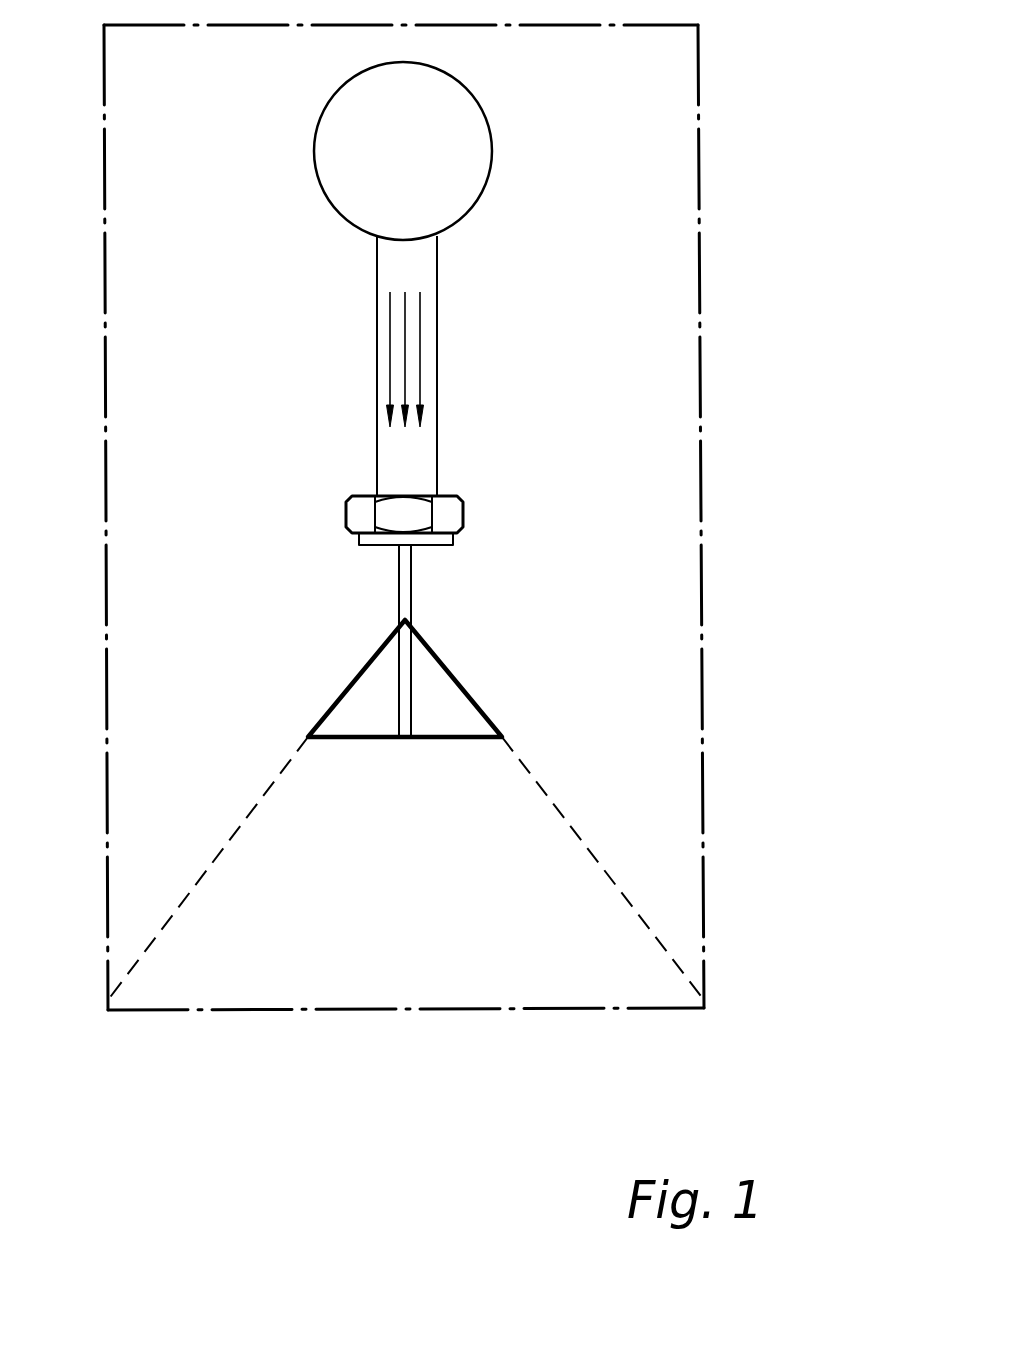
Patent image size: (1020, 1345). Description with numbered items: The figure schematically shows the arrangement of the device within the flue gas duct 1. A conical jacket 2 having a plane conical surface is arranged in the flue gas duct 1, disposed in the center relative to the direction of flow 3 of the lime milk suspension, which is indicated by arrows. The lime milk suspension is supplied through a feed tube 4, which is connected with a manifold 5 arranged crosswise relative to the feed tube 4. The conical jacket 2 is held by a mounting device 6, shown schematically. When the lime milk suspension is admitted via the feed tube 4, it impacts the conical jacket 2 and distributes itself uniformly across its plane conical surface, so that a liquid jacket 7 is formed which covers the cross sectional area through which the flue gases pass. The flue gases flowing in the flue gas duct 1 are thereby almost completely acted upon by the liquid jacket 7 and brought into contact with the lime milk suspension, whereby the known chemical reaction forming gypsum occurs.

The flue gas duct 1 is at (668, 840).
The conical jacket 2 is at (455, 670).
The direction of flow 3 is at (405, 337).
The feed tube 4 is at (436, 442).
The manifold 5 is at (492, 166).
The mounting device 6 is at (404, 585).
The liquid jacket 7 is at (550, 815).